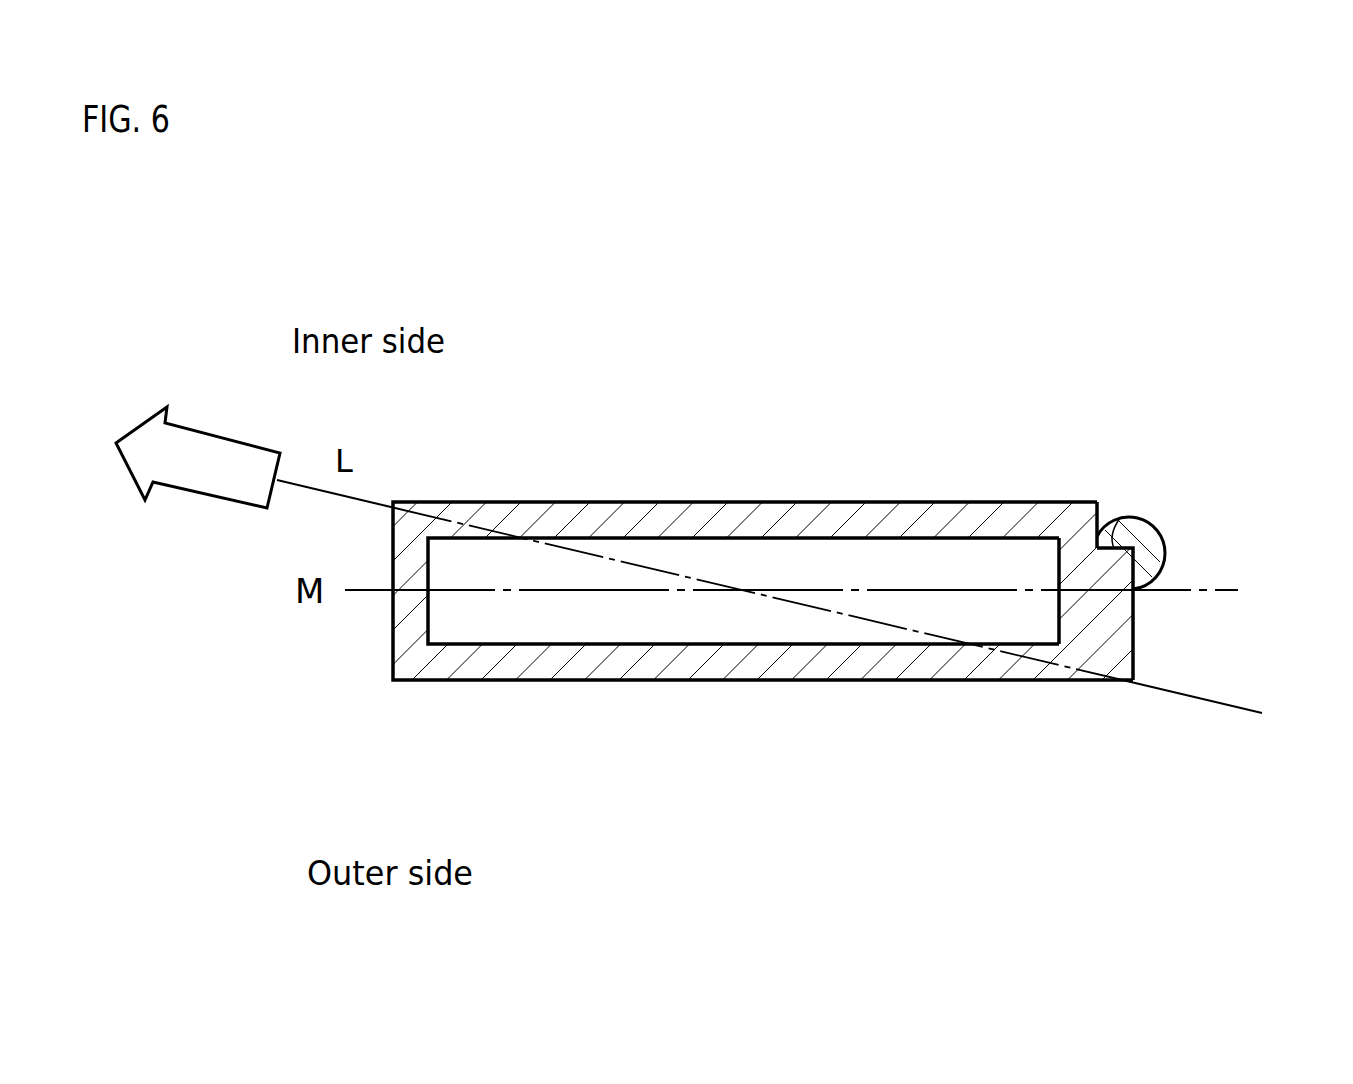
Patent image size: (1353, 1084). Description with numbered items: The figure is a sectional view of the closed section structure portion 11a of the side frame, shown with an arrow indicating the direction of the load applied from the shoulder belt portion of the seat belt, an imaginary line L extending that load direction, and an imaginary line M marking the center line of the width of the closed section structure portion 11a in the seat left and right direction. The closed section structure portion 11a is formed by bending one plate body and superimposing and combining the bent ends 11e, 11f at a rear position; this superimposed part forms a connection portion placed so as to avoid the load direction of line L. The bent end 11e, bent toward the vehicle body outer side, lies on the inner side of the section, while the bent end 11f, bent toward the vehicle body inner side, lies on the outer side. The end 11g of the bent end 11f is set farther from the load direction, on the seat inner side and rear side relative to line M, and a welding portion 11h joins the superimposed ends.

The closed section structure portion 11a is at (733, 682).
The bent end 11e is at (1058, 562).
The bent end 11f is at (1133, 632).
The end 11g is at (1110, 522).
The welding portion 11h is at (1155, 537).